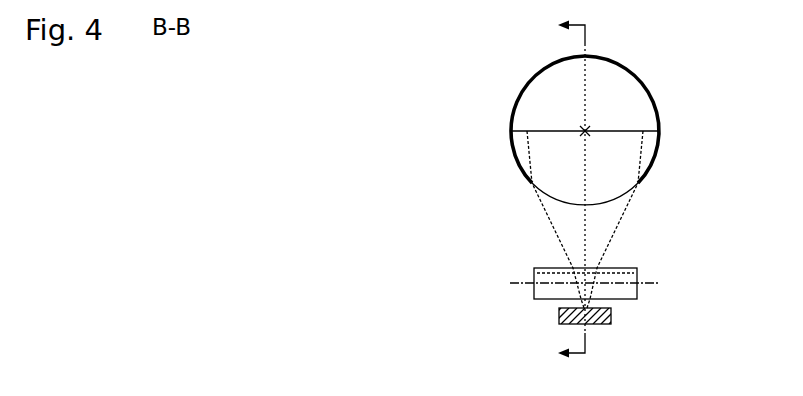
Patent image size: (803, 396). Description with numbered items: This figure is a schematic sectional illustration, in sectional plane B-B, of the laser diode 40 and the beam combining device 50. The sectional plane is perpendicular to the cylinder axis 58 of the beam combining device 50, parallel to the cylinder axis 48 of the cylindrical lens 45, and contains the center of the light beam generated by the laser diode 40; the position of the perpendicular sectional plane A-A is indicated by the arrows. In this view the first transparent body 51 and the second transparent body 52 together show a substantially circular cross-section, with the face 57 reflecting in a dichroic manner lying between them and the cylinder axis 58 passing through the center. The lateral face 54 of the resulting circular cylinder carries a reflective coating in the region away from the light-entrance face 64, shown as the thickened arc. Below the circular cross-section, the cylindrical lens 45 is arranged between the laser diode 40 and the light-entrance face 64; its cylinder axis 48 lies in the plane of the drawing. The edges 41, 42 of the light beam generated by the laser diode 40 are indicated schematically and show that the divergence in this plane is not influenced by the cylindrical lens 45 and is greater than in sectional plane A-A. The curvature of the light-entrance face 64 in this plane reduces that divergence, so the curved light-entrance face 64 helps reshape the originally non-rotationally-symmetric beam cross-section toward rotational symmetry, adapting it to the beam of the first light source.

The laser diode 40 is at (612, 318).
The edge of the light beam 41 is at (570, 246).
The edge of the light beam 42 is at (610, 243).
The cylindrical lens 45 is at (633, 293).
The cylinder axis of the cylindrical lens 48 is at (531, 283).
The beam combining device 50 is at (276, 329).
The first transparent body 51 is at (520, 158).
The second transparent body 52 is at (527, 88).
The lateral face 54 is at (603, 57).
The face reflecting in a dichroic manner 57 is at (612, 131).
The cylinder axis 58 is at (583, 130).
The light-entrance face 64 is at (575, 207).